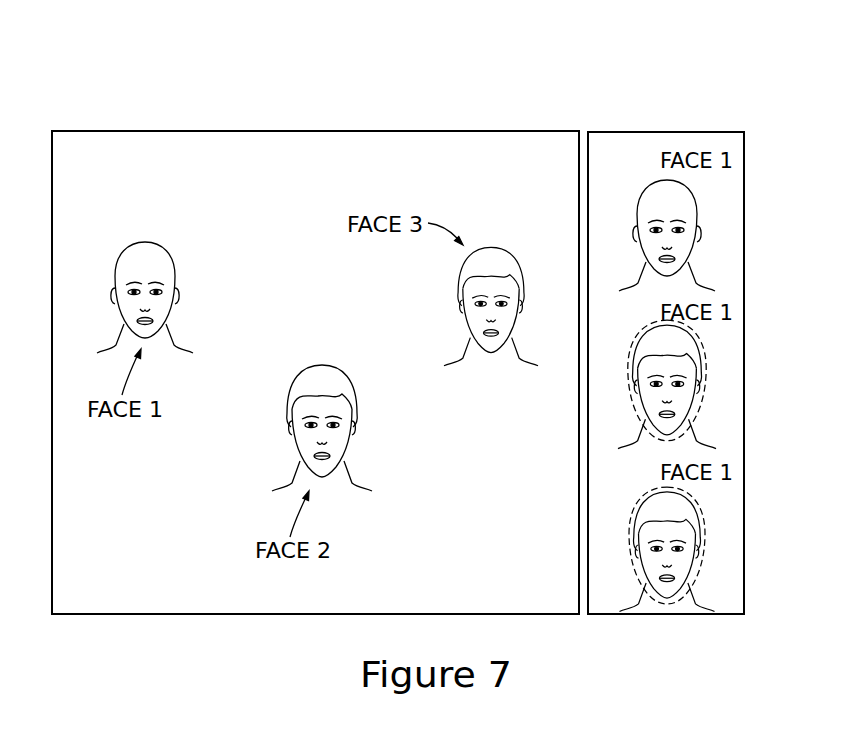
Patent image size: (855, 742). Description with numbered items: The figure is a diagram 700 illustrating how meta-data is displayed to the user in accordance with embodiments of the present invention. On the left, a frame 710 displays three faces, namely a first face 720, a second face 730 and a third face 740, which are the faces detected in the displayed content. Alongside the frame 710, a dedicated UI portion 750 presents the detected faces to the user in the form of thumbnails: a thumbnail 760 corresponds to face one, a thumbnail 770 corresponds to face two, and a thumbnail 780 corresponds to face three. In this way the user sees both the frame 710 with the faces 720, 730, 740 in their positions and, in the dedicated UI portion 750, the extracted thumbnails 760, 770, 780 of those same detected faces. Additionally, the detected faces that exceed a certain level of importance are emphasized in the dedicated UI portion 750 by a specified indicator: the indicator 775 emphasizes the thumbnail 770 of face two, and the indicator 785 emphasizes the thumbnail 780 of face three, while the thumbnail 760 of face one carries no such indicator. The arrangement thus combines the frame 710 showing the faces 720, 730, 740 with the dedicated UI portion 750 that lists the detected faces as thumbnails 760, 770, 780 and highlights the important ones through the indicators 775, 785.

The diagram 700 is at (86, 52).
The frame 710 is at (112, 130).
The face 720 is at (152, 250).
The face 730 is at (337, 375).
The face 740 is at (497, 257).
The dedicated UI portion 750 is at (650, 131).
The thumbnail of detected face 760 is at (682, 204).
The thumbnail of detected face 770 is at (681, 342).
The specified indicator 775 is at (704, 355).
The thumbnail of detected face 780 is at (681, 512).
The specified indicator 785 is at (705, 532).